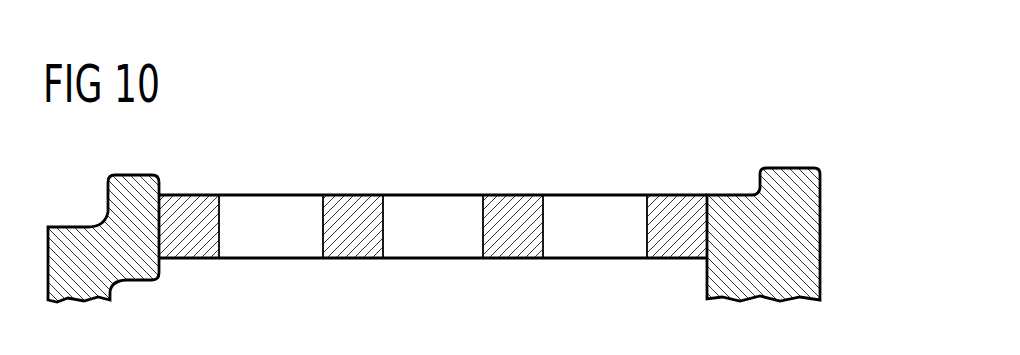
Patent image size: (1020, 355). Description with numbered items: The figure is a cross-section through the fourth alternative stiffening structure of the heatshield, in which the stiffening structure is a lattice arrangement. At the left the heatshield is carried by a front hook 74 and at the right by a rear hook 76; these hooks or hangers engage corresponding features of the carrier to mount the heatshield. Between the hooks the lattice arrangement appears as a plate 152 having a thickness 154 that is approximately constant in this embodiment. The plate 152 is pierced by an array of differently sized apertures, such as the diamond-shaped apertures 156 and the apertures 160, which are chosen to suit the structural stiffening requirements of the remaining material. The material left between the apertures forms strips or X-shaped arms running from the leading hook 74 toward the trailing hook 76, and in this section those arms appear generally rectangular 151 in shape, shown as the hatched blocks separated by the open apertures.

The front hook 74 is at (108, 191).
The rear hook 76 is at (820, 183).
The rectangular section of arm 151 is at (355, 204).
The plate 152 is at (630, 196).
The thickness 154 is at (514, 280).
The diamond-shaped aperture 156 is at (595, 205).
The aperture 160 is at (432, 252).